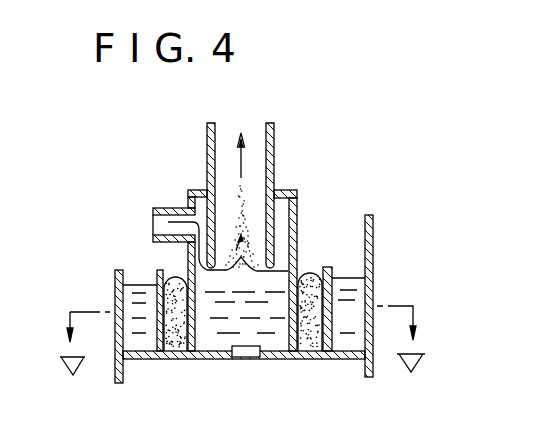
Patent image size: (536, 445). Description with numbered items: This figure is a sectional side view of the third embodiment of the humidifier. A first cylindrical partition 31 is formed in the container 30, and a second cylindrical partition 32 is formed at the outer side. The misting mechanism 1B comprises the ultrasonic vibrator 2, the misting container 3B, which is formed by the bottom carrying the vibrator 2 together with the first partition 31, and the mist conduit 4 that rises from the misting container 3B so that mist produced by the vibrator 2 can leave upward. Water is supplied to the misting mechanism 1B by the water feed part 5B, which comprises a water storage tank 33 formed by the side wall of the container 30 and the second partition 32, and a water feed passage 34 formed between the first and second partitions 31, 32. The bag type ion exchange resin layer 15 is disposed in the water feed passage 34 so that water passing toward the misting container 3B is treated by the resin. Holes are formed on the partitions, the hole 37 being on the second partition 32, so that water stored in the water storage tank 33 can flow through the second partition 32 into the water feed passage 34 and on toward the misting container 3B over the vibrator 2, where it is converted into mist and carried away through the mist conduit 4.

The mist conduit 4 is at (268, 147).
The first cylindrical partition 31 is at (295, 217).
The second cylindrical partition 32 is at (328, 268).
The container 30 is at (373, 242).
The water feed passage 34 is at (186, 270).
The bag type ion exchange resin layer 15 is at (168, 272).
The water storage tank 33 is at (128, 362).
The water feed part 5B is at (173, 360).
The misting container 3B is at (203, 318).
The ultrasonic vibrator 2 is at (246, 358).
The misting mechanism 1B is at (282, 358).
The hole 37 is at (337, 350).